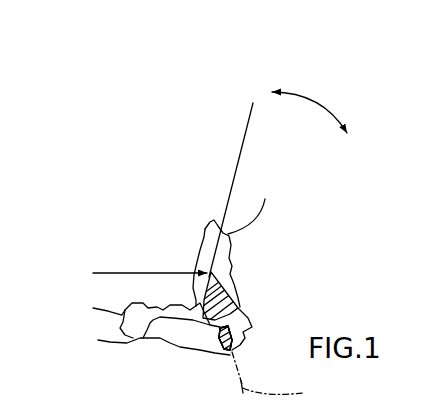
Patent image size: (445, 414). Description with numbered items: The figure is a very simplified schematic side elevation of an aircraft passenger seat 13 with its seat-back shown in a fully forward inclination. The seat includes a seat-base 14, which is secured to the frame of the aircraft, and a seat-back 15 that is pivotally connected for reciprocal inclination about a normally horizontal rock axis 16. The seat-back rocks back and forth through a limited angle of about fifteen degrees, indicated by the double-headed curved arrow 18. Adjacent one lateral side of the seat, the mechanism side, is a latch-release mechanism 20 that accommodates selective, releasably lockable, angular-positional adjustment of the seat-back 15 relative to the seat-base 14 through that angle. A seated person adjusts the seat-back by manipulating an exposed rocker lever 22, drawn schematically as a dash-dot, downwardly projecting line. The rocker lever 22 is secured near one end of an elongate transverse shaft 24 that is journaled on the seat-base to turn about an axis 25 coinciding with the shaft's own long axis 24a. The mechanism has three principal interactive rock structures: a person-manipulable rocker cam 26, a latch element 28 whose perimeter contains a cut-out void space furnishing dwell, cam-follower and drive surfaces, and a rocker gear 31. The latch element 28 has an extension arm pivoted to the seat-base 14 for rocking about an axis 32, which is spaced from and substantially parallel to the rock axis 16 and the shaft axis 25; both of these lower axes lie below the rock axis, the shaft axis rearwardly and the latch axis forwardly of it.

The aircraft passenger seat 13 is at (193, 170).
The seat-base 14 is at (118, 276).
The seat-back 15 is at (236, 167).
The rock axis 16 is at (209, 271).
The double-headed curved arrow 18 is at (333, 116).
The latch-release mechanism 20 is at (278, 277).
The rocker lever 22 is at (281, 378).
The transverse shaft 24 is at (172, 353).
The long axis of shaft 24a is at (185, 355).
The shaft pivot axis 25 is at (228, 356).
The rocker cam 26 is at (238, 334).
The latch element 28 is at (158, 313).
The rocker gear 31 is at (233, 287).
The latch pivot axis 32 is at (151, 340).